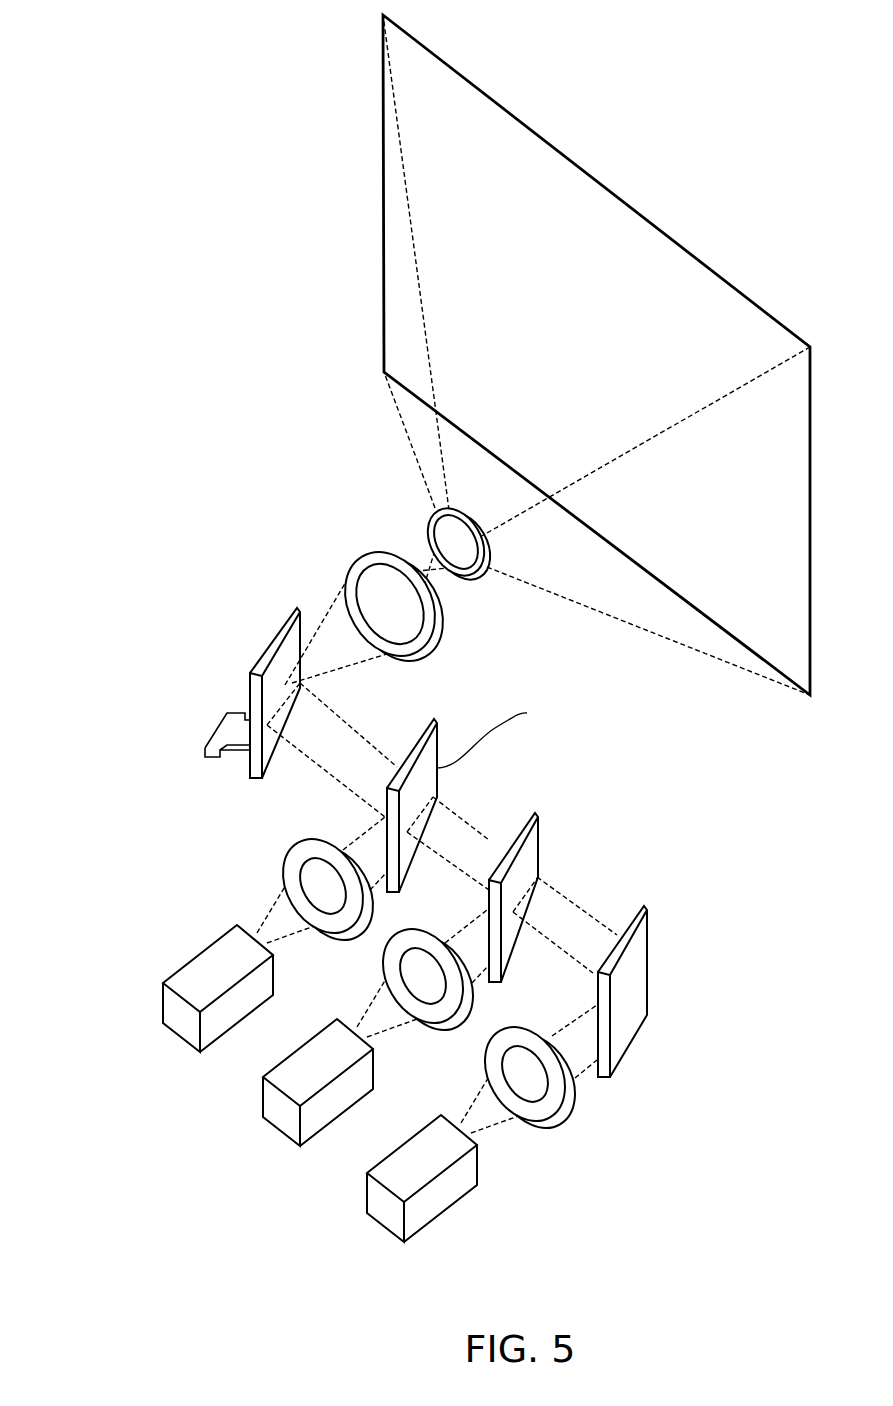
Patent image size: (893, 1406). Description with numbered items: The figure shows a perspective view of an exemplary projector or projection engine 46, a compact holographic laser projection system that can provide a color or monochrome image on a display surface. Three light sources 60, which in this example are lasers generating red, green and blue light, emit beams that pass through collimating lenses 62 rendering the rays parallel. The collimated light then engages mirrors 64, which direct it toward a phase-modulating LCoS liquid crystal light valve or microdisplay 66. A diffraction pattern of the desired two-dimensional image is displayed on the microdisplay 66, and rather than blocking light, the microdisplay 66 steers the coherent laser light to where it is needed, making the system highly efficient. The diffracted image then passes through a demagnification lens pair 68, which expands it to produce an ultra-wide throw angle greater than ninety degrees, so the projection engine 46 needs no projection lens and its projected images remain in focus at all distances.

The projection engine 46 is at (200, 345).
The light sources 60 is at (157, 977).
The collimating lenses 62 is at (293, 860).
The mirrors 64 is at (538, 852).
The microdisplay 66 is at (255, 642).
The demagnification lens pair 68 is at (424, 500).